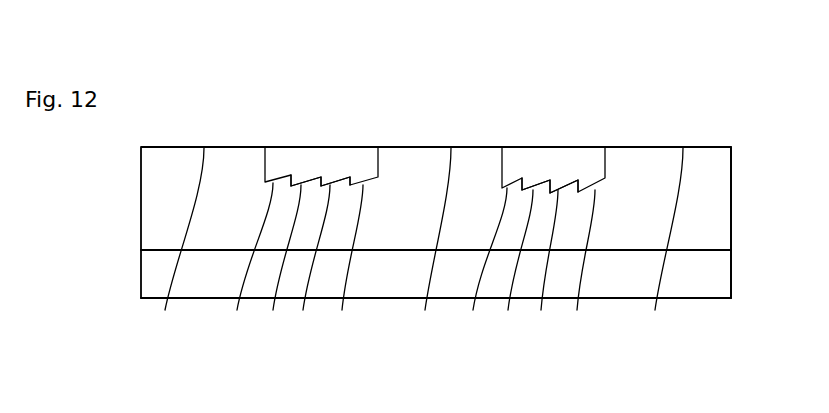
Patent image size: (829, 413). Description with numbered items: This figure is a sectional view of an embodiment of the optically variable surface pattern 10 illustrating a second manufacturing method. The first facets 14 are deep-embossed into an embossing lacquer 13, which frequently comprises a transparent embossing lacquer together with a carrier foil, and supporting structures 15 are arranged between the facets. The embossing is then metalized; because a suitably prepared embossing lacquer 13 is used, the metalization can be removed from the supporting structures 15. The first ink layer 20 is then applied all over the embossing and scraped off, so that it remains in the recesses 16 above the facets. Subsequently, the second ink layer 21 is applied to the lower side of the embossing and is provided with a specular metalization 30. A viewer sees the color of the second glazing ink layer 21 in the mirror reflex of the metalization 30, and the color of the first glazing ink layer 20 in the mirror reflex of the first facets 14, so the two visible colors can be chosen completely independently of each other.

The optically variable surface pattern 10 is at (692, 147).
The embossing lacquer 13 is at (715, 230).
The first facets 14 is at (411, 262).
The supporting structures 15 is at (420, 244).
The recess 16 is at (284, 180).
The first ink layer 20 is at (335, 178).
The second ink layer 21 is at (628, 283).
The specular metalization 30 is at (398, 298).